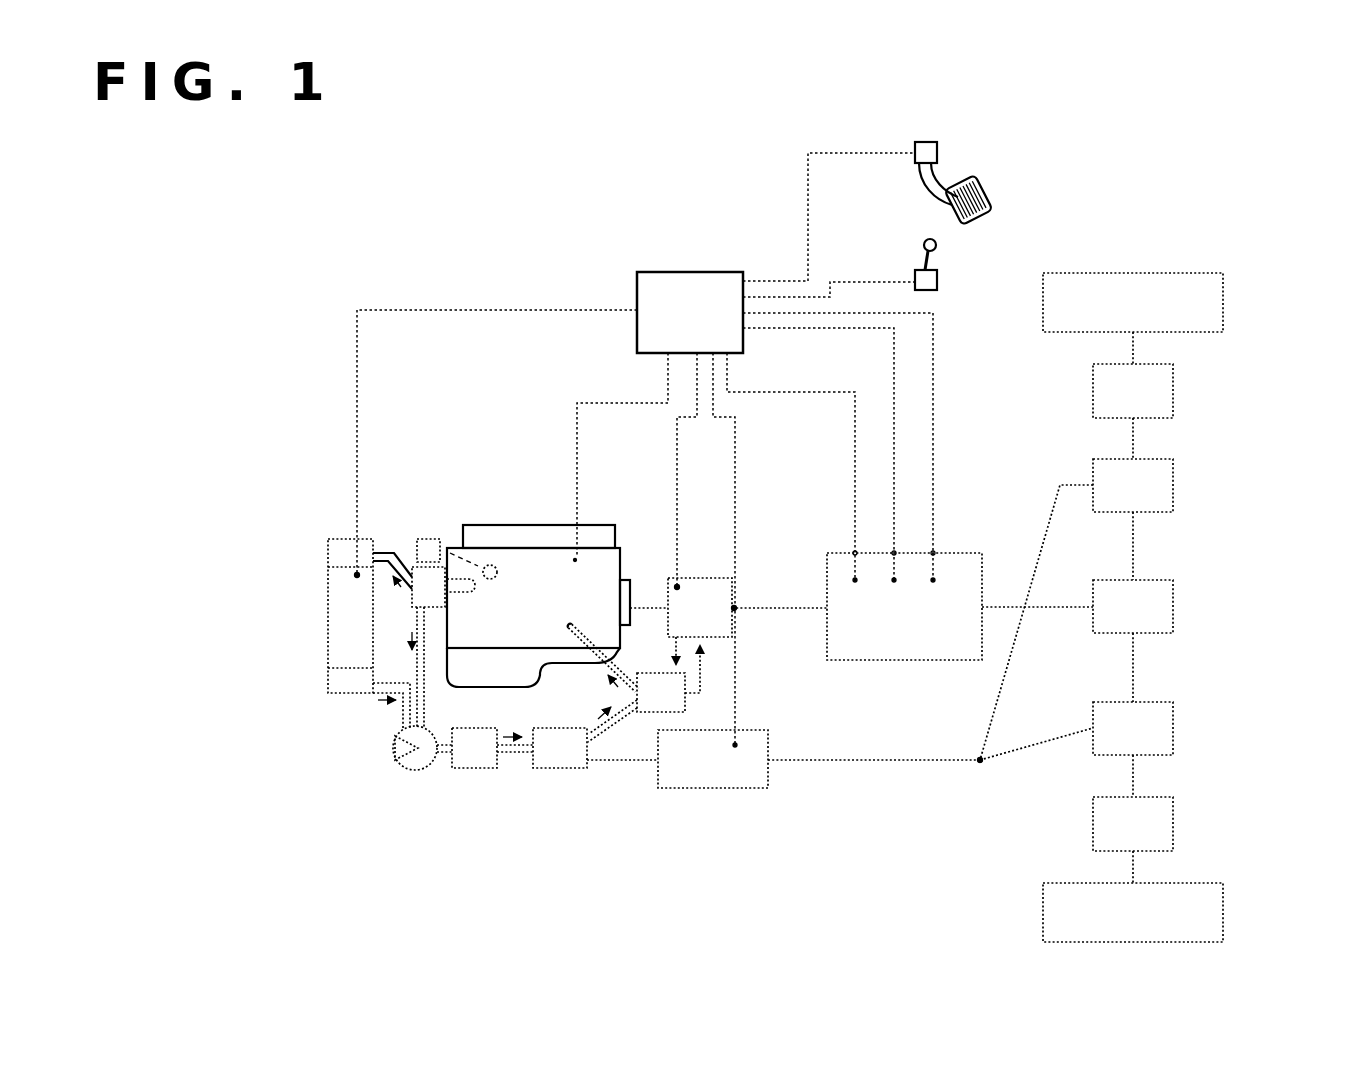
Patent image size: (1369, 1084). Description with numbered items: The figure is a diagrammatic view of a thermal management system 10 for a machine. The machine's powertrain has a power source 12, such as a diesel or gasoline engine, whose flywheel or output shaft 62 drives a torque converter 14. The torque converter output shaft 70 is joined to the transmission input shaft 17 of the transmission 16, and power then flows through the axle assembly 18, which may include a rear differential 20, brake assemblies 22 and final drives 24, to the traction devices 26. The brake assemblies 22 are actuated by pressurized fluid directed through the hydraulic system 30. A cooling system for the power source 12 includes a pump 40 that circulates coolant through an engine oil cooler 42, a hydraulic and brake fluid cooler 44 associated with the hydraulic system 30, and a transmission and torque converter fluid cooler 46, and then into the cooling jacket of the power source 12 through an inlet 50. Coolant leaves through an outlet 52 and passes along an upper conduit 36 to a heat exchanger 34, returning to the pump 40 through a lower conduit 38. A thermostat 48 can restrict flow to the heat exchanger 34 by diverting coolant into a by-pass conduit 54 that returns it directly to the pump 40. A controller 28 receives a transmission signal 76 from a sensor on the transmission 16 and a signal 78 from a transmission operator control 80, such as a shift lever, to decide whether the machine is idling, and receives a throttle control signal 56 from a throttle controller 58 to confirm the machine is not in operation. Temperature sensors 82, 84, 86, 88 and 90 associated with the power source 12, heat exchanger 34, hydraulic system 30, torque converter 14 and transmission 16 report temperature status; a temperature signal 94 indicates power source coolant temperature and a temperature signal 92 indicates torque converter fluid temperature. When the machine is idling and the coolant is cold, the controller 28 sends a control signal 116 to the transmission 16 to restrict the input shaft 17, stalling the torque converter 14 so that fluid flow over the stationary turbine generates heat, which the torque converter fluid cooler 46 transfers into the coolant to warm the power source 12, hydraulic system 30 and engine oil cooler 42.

The thermal management system 10 is at (1120, 138).
The power source 12 is at (521, 588).
The torque converter 14 is at (680, 583).
The transmission 16 is at (893, 618).
The transmission input shaft 17 is at (770, 606).
The axle assembly 18 is at (1258, 519).
The rear differential 20 is at (1121, 618).
The brake assemblies 22 is at (1121, 498).
The final drives 24 is at (1121, 402).
The traction devices 26 is at (1121, 313).
The controller 28 is at (678, 319).
The hydraulic system 30 is at (701, 768).
The heat exchanger 34 is at (340, 580).
The upper conduit 36 is at (380, 553).
The lower conduit 38 is at (380, 683).
The pump 40 is at (390, 757).
The engine oil cooler 42 is at (463, 758).
The hydraulic and/or brake fluid cooler 44 is at (548, 758).
The transmission and torque converter fluid cooler 46 is at (648, 703).
The thermostat 48 is at (427, 540).
The inlet 50 is at (575, 621).
The outlet 52 is at (475, 586).
The by-pass conduit 54 is at (425, 678).
The throttle control signal 56 is at (852, 150).
The throttle controller 58 is at (996, 179).
The output shaft 62 is at (632, 608).
The torque converter output shaft 70 is at (734, 608).
The transmission signal 76 is at (894, 408).
The signal 78 is at (888, 282).
The transmission operator control 80 is at (950, 245).
The temperature sensor 82 is at (575, 560).
The temperature sensor 84 is at (357, 582).
The temperature sensor 86 is at (735, 745).
The temperature sensor 88 is at (677, 587).
The temperature sensor 90 is at (855, 580).
The temperature signal 92 is at (677, 452).
The temperature signal 94 is at (620, 403).
The control signal 116 is at (933, 383).